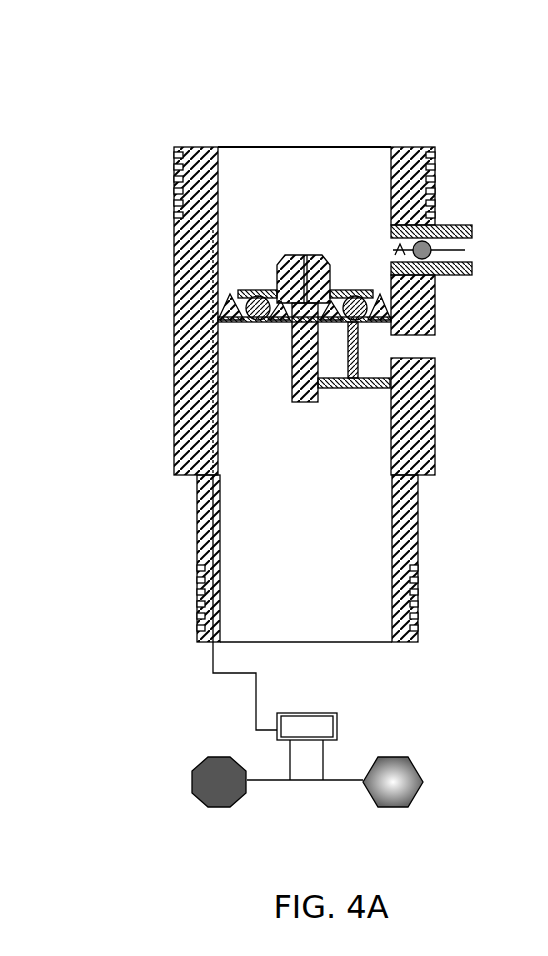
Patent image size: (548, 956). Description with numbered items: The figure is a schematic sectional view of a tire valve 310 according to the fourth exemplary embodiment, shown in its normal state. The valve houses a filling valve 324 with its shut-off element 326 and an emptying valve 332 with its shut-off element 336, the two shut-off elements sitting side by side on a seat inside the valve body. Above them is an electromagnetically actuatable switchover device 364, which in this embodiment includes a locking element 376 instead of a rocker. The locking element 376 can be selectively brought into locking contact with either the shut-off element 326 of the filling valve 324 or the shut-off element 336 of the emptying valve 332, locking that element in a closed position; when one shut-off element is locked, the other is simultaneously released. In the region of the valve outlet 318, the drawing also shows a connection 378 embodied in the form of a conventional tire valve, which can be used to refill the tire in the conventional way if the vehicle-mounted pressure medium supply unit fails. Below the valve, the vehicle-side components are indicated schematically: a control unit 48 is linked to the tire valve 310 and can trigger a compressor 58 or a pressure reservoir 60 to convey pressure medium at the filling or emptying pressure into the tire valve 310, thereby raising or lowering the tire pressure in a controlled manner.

The tire valve 310 is at (126, 119).
The valve outlet 318 is at (310, 142).
The electromagnetically actuatable switchover device 364 is at (288, 244).
The locking element 376 is at (370, 298).
The connection 378 is at (450, 223).
The filling valve 324 is at (243, 300).
The shut-off element 326 is at (257, 322).
The emptying valve 332 is at (380, 304).
The shut-off element 336 is at (365, 322).
The control unit 48 is at (330, 712).
The compressor 58 is at (238, 800).
The pressure reservoir 60 is at (420, 793).